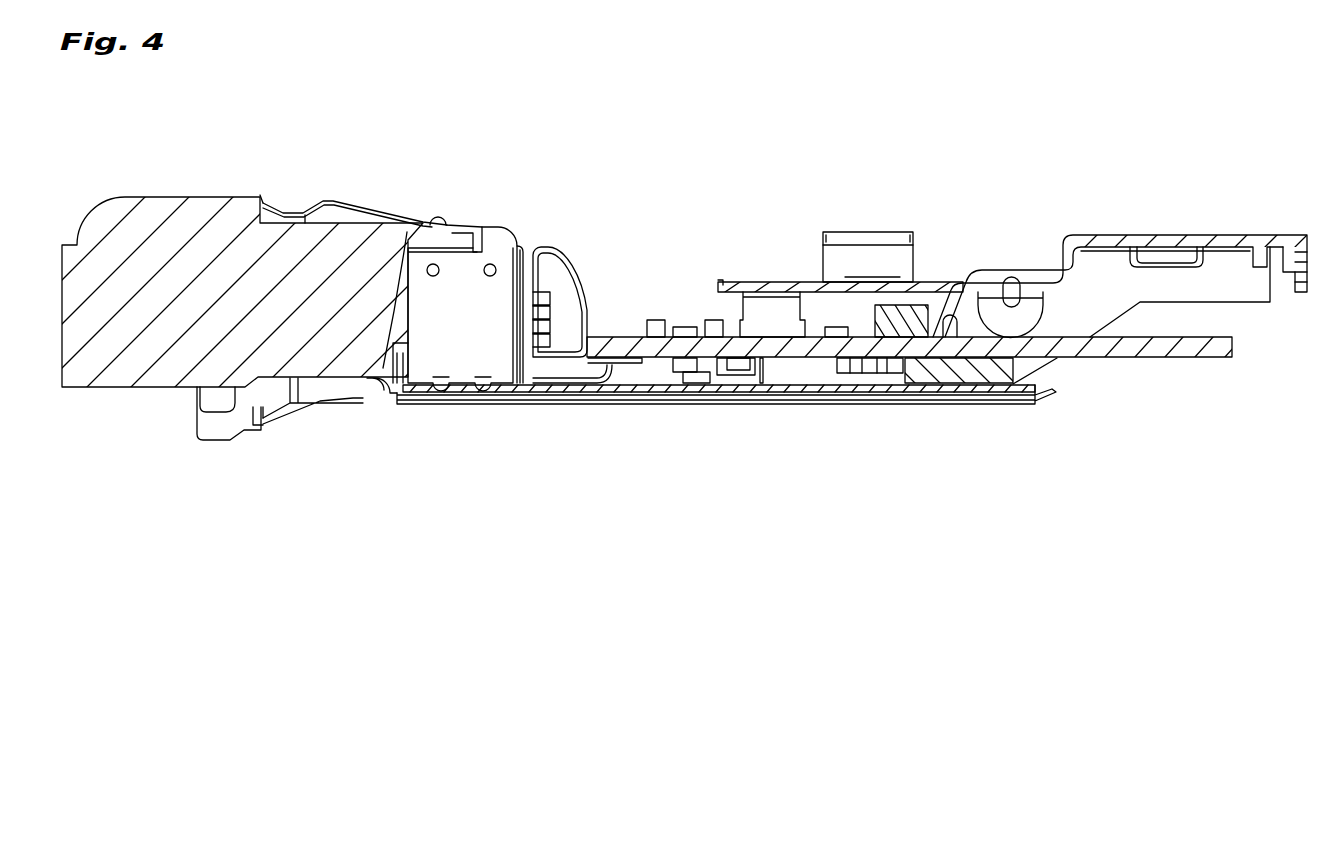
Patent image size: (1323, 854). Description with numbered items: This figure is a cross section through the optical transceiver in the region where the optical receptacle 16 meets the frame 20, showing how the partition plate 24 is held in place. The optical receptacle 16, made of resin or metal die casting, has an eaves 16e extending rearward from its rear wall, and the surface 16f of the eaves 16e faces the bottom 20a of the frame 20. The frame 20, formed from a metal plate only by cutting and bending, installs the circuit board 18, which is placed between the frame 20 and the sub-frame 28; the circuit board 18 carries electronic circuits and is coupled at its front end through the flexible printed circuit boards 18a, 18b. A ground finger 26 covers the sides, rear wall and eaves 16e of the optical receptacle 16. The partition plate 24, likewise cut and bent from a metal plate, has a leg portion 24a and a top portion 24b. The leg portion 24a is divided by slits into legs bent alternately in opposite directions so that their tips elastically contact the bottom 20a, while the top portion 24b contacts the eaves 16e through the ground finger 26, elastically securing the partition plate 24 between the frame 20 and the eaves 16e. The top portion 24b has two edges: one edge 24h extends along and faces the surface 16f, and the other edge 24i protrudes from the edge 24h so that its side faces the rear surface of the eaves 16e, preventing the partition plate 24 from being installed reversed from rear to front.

The optical receptacle 16 is at (118, 370).
The eaves 16e is at (455, 225).
The surface of the eaves 16f is at (383, 368).
The circuit board 18 is at (1147, 350).
The flexible printed circuit board 18a is at (590, 255).
The flexible printed circuit board 18b is at (557, 302).
The frame 20 is at (913, 385).
The bottom of the frame 20a is at (643, 386).
The partition plate 24 is at (442, 332).
The leg portion 24a is at (460, 377).
The top portion 24b is at (548, 239).
The edge of the top portion 24h is at (467, 245).
The edge of the top portion 24i is at (500, 240).
The ground finger 26 is at (357, 207).
The sub-frame 28 is at (1146, 235).